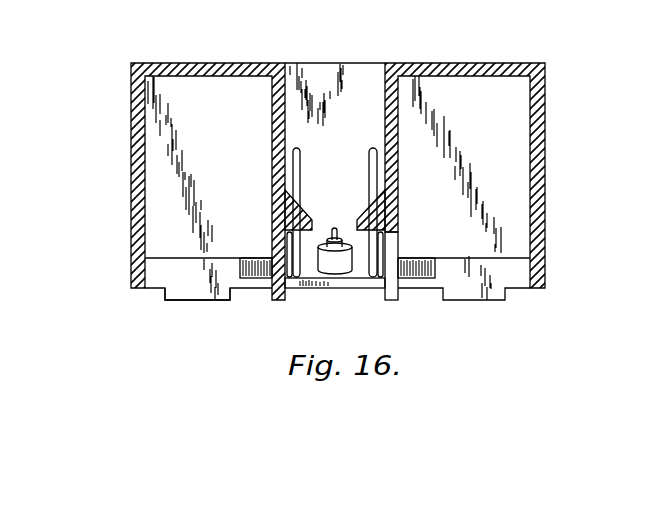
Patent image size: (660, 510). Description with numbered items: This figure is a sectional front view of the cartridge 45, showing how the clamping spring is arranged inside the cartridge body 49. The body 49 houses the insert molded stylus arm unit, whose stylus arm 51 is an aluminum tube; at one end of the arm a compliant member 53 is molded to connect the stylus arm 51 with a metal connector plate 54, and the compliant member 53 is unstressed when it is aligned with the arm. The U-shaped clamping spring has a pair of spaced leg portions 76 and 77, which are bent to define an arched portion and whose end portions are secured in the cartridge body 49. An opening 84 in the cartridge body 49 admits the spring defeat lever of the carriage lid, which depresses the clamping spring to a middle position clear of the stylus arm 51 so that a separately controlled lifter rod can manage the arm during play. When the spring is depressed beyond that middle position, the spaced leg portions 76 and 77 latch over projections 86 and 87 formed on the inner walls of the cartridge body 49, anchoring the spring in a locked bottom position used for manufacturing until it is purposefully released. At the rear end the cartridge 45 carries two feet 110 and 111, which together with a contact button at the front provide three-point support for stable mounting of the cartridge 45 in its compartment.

The cartridge 45 is at (124, 169).
The cartridge body 49 is at (546, 103).
The opening 84 is at (360, 73).
The projection 86 is at (272, 198).
The projection 87 is at (398, 215).
The spaced leg portion 76 is at (301, 163).
The spaced leg portion 77 is at (368, 156).
The stylus arm 51 is at (335, 229).
The compliant member 53 is at (339, 271).
The connector plate 54 is at (423, 265).
The foot 110 is at (200, 302).
The foot 111 is at (468, 301).